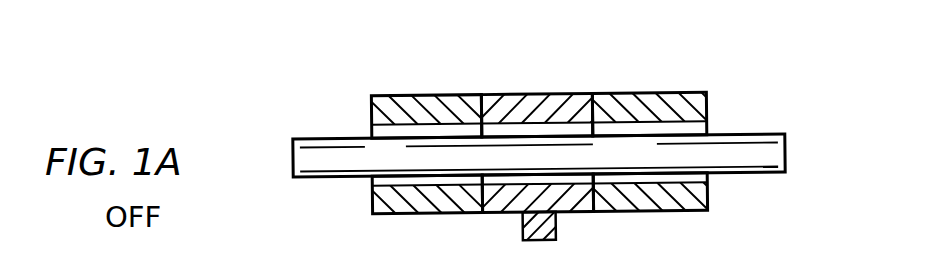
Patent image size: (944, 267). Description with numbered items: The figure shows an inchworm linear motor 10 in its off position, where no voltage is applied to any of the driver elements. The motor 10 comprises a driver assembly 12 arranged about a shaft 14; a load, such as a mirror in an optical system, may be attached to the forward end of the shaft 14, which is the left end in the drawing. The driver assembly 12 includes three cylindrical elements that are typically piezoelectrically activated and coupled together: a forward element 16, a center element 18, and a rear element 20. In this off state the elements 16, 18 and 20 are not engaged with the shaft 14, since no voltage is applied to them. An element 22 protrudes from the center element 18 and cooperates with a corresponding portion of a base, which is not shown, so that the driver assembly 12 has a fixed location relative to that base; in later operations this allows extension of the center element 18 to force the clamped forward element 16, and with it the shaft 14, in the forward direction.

The inchworm linear motor 10 is at (558, 132).
The driver assembly 12 is at (548, 117).
The shaft 14 is at (748, 133).
The forward element 16 is at (420, 96).
The center element 18 is at (532, 96).
The rear element 20 is at (647, 93).
The protruding element 22 is at (555, 223).